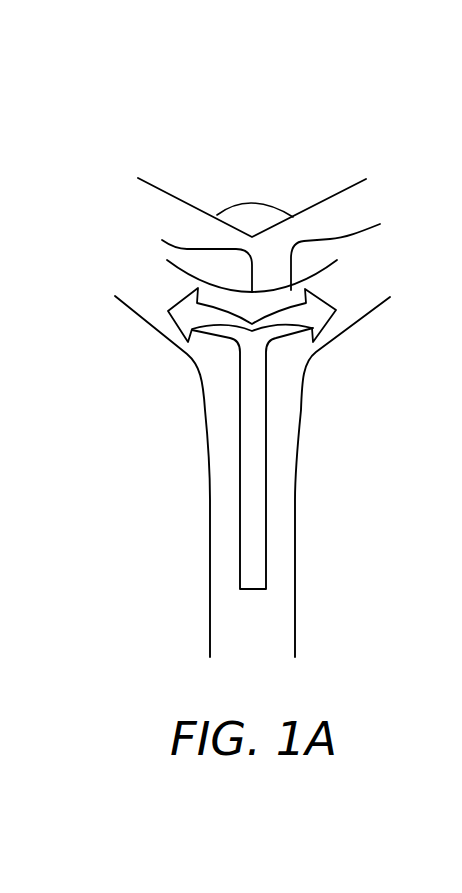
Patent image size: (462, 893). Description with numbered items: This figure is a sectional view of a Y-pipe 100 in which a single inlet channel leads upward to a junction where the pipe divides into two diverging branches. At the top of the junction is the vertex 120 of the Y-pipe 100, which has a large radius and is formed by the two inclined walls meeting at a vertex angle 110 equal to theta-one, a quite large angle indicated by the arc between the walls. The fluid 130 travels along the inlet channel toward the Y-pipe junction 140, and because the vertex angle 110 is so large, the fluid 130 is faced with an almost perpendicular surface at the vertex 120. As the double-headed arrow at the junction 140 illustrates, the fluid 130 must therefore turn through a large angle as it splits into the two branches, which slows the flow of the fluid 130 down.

The Y-pipe 100 is at (138, 452).
The vertex angle 110 is at (242, 177).
The vertex 120 is at (187, 259).
The fluid 130 is at (240, 552).
The Y-pipe junction 140 is at (283, 348).